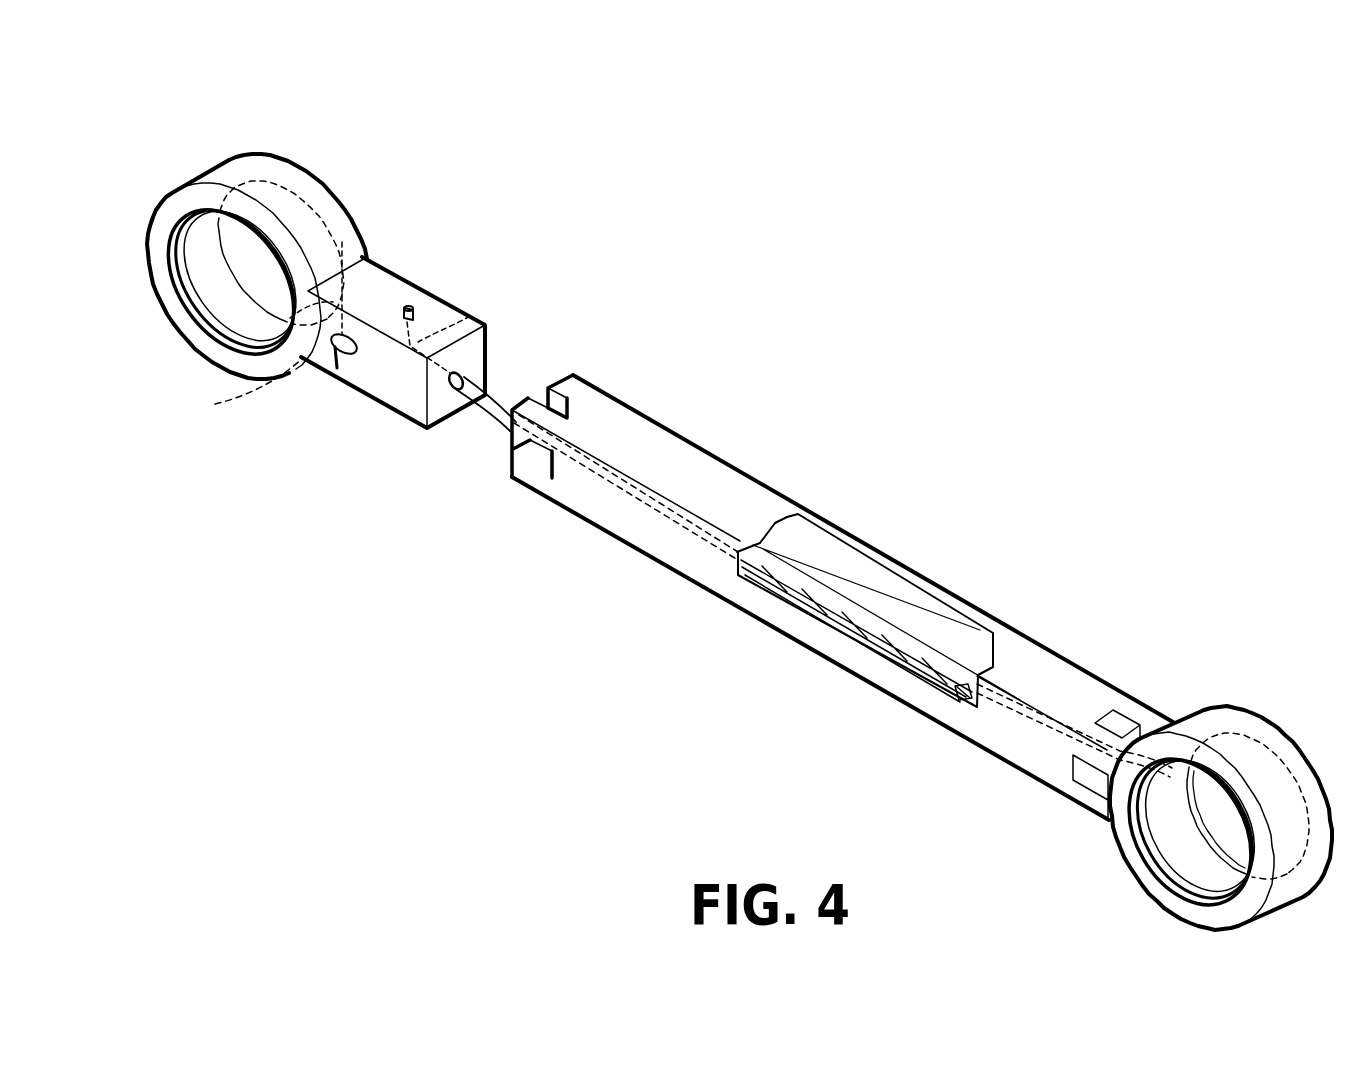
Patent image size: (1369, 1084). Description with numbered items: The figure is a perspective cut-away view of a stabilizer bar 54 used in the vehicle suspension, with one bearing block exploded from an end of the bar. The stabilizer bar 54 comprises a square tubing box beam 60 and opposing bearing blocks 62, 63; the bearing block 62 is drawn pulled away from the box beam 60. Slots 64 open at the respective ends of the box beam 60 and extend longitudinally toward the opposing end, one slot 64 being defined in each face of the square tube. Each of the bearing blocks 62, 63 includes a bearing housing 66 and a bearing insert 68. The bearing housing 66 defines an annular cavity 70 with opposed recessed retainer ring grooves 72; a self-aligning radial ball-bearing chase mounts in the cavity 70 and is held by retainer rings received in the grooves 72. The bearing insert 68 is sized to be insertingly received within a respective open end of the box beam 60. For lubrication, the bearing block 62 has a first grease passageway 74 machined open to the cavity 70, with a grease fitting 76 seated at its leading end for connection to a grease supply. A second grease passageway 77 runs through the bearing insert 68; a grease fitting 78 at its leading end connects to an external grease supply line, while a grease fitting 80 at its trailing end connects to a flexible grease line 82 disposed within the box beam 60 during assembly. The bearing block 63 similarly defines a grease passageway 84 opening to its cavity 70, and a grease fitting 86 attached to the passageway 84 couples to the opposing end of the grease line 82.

The stabilizer bar 54 is at (717, 467).
The square tubing box beam 60 is at (620, 525).
The bearing block 62 is at (293, 170).
The bearing block 63 is at (1250, 763).
The slots 64 is at (567, 410).
The bearing housing 66 is at (218, 182).
The bearing insert 68 is at (417, 293).
The annular cavity 70 is at (197, 273).
The retainer ring grooves 72 is at (233, 247).
The first grease passageway 74 is at (237, 390).
The grease fitting 76 is at (337, 370).
The second grease passageway 77 is at (470, 316).
The grease fitting 78 is at (403, 310).
The grease fitting 80 is at (460, 373).
The flexible grease line 82 is at (512, 421).
The grease passageway 84 is at (1168, 772).
The grease fitting 86 is at (937, 691).